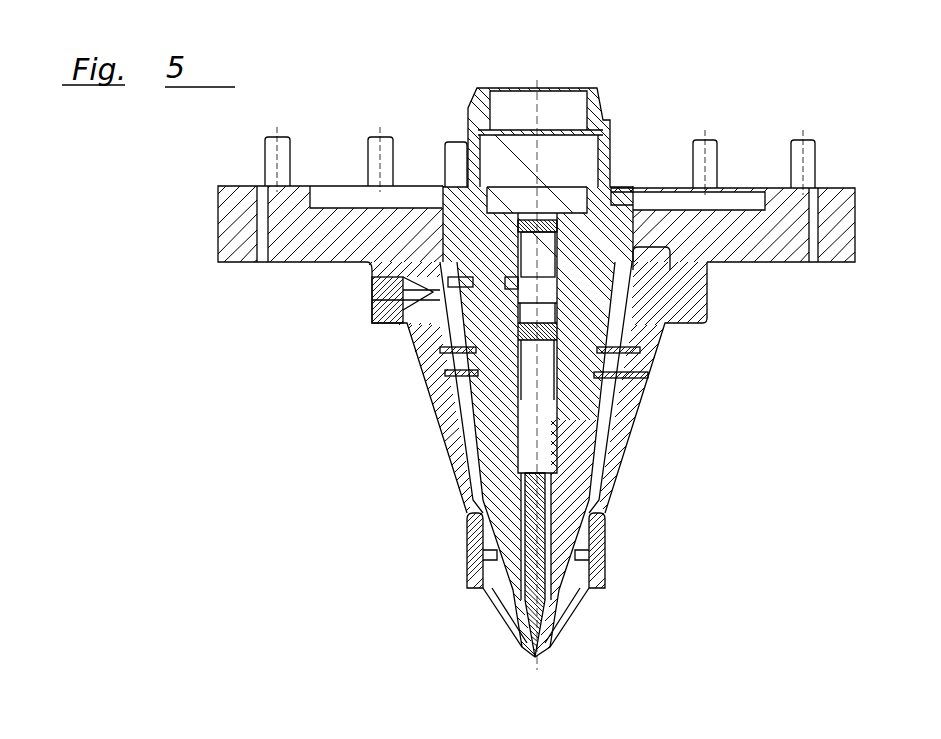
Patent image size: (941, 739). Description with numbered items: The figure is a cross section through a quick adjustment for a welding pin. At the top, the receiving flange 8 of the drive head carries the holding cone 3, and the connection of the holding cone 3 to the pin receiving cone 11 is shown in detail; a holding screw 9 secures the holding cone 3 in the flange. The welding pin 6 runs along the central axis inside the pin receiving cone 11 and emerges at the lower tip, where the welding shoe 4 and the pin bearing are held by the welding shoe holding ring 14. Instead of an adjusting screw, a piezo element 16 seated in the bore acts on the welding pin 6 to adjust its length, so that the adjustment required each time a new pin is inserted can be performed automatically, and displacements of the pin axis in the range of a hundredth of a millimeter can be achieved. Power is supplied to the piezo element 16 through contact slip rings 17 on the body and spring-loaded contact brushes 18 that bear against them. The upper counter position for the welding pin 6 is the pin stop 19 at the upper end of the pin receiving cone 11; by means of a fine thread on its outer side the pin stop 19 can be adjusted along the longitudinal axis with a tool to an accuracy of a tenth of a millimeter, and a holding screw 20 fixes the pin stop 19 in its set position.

The holding cone 3 is at (613, 455).
The welding shoe 4 is at (567, 610).
The welding pin 6 is at (540, 558).
The receiving flange 8 is at (855, 238).
The holding screw 9 is at (370, 291).
The pin receiving cone 11 is at (583, 408).
The welding shoe holding ring 14 is at (603, 533).
The piezo element 16 is at (523, 368).
The contact slip rings 17 is at (657, 340).
The spring-loaded contact brushes 18 is at (657, 358).
The pin stop 19 is at (550, 262).
The holding screw 20 is at (505, 284).